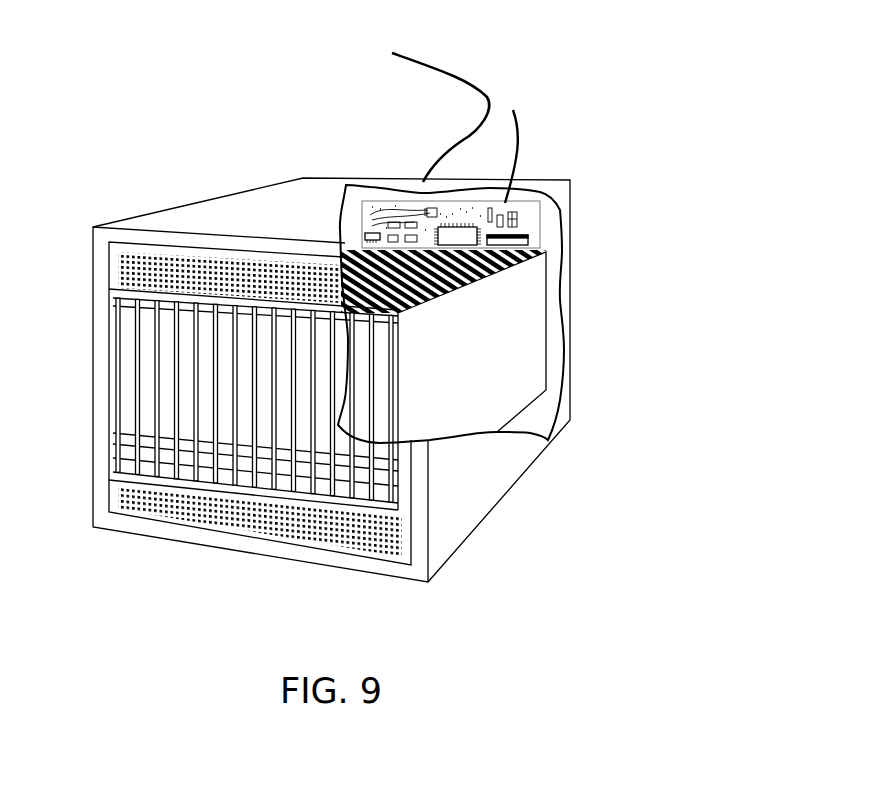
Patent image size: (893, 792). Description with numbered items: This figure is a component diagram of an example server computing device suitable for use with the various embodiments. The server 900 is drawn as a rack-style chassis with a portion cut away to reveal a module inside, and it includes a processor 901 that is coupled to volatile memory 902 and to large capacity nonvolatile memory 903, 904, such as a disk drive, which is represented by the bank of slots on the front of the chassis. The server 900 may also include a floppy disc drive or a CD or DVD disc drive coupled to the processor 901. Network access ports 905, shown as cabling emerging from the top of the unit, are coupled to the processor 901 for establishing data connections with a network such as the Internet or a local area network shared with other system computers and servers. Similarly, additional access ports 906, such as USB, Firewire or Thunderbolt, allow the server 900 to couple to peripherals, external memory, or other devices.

The server 900 is at (240, 195).
The processor 901 is at (458, 238).
The volatile memory 902 is at (524, 242).
The large capacity nonvolatile memory 903 is at (162, 350).
The large capacity nonvolatile memory 904 is at (141, 378).
The network access ports 905 is at (489, 102).
The additional access ports 906 is at (363, 233).